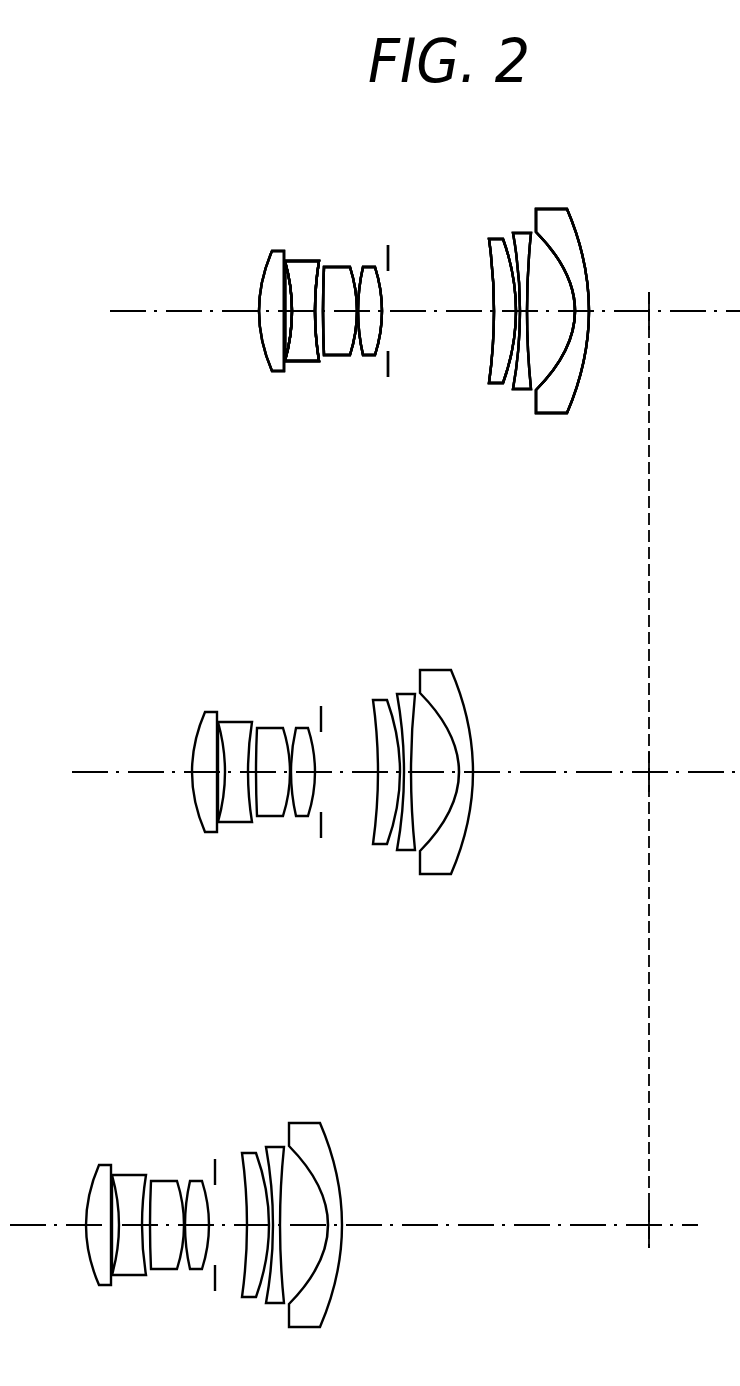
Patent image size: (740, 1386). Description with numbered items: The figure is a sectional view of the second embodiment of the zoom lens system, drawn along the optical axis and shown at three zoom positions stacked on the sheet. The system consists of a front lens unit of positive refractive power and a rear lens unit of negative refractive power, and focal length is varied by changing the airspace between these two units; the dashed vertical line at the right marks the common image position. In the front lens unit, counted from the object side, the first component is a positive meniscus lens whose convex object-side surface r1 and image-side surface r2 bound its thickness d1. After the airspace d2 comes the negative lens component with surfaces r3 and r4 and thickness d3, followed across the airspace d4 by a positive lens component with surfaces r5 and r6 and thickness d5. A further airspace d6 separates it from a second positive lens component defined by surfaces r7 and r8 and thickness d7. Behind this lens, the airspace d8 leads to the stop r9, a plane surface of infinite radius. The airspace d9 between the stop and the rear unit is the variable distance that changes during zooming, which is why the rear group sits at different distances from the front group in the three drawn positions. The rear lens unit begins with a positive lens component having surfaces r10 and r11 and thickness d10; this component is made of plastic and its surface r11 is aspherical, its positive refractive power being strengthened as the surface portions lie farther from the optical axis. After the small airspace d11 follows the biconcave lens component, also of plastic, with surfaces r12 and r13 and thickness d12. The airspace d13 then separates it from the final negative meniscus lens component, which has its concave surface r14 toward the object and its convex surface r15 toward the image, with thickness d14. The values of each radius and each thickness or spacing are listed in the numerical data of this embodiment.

The radius of curvature of first lens surface r1 is at (265, 272).
The radius of curvature of second lens surface r2 is at (279, 268).
The radius of curvature of third lens surface r3 is at (297, 262).
The radius of curvature of fourth lens surface r4 is at (320, 264).
The radius of curvature of fifth lens surface r5 is at (330, 262).
The radius of curvature of sixth lens surface r6 is at (340, 262).
The radius of curvature of seventh lens surface r7 is at (358, 266).
The radius of curvature of eighth lens surface r8 is at (372, 264).
The stop r9 is at (390, 250).
The radius of curvature of tenth lens surface r10 is at (488, 266).
The radius of curvature of eleventh lens surface r11 is at (503, 267).
The radius of curvature of twelfth lens surface r12 is at (518, 238).
The radius of curvature of thirteenth lens surface r13 is at (525, 237).
The radius of curvature of fourteenth lens surface r14 is at (550, 233).
The radius of curvature of fifteenth lens surface r15 is at (583, 237).
The thickness of first lens component d1 is at (268, 324).
The airspace between first and second lens components d2 is at (287, 327).
The thickness of negative lens component d3 is at (307, 333).
The airspace between negative lens component and positive lens component d4 is at (317, 333).
The thickness of third lens component d5 is at (330, 330).
The airspace between third and fourth lens components d6 is at (357, 330).
The thickness of fourth lens component d7 is at (367, 337).
The airspace between fourth lens component and stop d8 is at (388, 316).
The variable airspace d9 is at (422, 316).
The thickness of plastic positive lens component d10 is at (492, 325).
The airspace between positive and biconcave lens components d11 is at (515, 317).
The thickness of biconcave lens component d12 is at (520, 317).
The airspace between biconcave and negative meniscus lens components d13 is at (545, 380).
The thickness of negative meniscus lens component d14 is at (583, 315).